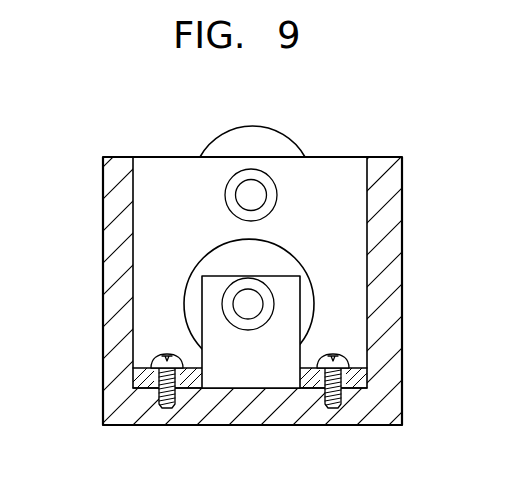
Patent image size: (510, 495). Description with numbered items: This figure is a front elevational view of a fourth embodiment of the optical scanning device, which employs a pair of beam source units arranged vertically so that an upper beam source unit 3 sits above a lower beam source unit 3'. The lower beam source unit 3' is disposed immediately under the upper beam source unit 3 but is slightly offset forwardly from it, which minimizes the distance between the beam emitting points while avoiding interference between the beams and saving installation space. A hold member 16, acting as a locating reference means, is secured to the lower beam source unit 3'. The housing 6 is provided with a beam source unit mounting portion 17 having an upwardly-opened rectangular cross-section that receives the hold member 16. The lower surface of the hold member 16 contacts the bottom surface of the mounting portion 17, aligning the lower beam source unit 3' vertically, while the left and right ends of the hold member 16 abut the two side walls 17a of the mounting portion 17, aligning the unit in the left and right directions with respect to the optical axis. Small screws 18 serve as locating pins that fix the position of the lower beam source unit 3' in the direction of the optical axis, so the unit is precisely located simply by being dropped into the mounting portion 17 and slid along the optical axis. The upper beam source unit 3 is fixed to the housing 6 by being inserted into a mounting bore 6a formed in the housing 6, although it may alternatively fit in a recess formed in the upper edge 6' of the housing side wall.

The upper beam source unit 3 is at (264, 131).
The lower beam source unit 3' is at (318, 294).
The housing 6 is at (255, 290).
The upper edge of the side wall of the housing 6' is at (269, 131).
The mounting bore 6a is at (230, 192).
The hold member 16 is at (208, 296).
The beam source unit mounting portion 17 is at (254, 384).
The side walls of the beam source unit mounting portion 17a is at (140, 331).
The small screws 18 is at (157, 408).